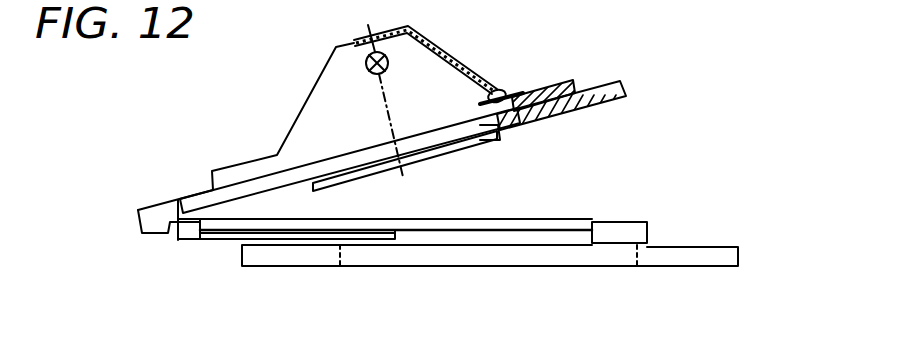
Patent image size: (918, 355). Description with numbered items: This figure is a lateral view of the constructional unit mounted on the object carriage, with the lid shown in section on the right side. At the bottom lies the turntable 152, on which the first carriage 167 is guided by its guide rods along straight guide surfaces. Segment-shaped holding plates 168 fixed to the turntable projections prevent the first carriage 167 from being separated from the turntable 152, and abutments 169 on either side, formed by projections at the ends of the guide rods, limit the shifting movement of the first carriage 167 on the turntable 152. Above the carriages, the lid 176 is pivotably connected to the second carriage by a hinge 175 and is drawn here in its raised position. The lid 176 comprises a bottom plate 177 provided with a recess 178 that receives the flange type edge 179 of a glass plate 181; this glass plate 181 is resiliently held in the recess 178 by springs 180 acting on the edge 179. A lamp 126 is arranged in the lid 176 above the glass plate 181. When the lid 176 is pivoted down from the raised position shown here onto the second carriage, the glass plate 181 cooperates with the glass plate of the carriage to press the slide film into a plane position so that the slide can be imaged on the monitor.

The lamp 126 is at (366, 56).
The lid 176 is at (246, 124).
The bottom plate 177 is at (587, 82).
The springs 180 is at (510, 91).
The flange type edge 179 is at (350, 149).
The recess 178 is at (541, 146).
The glass plate 181 is at (420, 166).
The first carriage 167 is at (398, 222).
The abutments 169 is at (620, 204).
The holding plates 168 is at (550, 219).
The hinge 175 is at (155, 240).
The turntable 152 is at (698, 266).